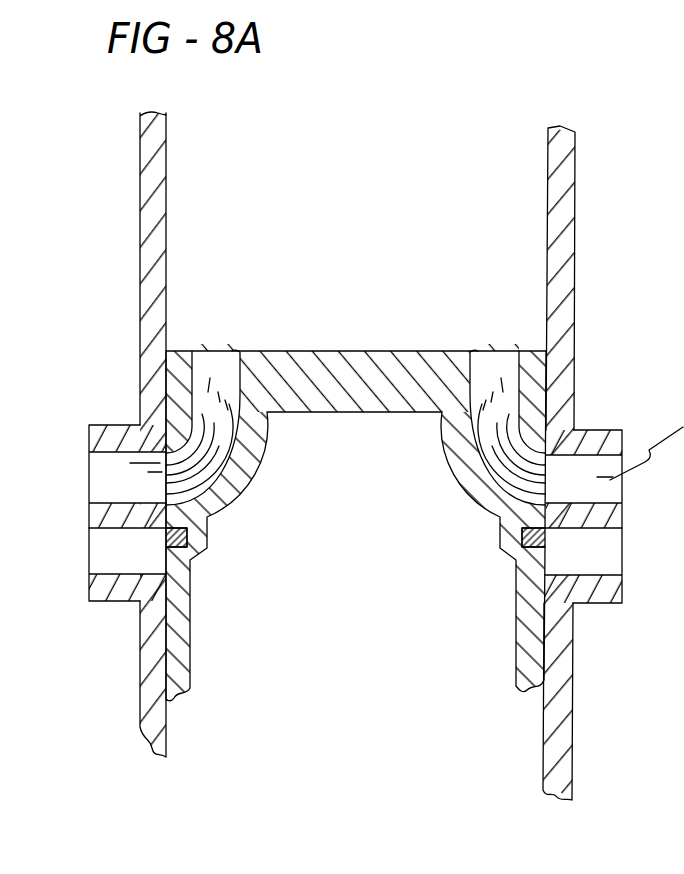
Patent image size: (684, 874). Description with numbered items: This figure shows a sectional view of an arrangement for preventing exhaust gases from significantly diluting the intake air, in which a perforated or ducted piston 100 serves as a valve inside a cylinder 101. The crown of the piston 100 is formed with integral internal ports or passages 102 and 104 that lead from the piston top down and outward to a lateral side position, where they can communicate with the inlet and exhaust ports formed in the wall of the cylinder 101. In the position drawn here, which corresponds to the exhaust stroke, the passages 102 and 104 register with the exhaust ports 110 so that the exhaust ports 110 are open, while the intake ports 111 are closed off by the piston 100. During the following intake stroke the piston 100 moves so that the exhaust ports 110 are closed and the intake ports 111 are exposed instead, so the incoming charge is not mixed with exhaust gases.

The piston 100 is at (381, 352).
The cylinder 101 is at (564, 272).
The internal port or passage 102 is at (213, 375).
The internal port or passage 104 is at (491, 364).
The exhaust port 110 is at (102, 478).
The intake port 111 is at (100, 558).